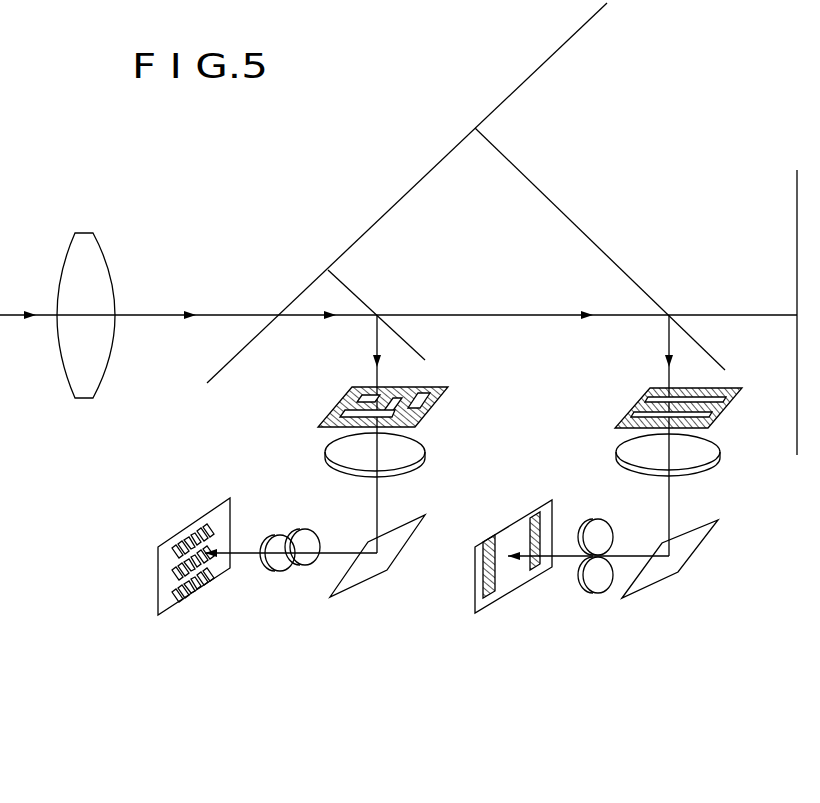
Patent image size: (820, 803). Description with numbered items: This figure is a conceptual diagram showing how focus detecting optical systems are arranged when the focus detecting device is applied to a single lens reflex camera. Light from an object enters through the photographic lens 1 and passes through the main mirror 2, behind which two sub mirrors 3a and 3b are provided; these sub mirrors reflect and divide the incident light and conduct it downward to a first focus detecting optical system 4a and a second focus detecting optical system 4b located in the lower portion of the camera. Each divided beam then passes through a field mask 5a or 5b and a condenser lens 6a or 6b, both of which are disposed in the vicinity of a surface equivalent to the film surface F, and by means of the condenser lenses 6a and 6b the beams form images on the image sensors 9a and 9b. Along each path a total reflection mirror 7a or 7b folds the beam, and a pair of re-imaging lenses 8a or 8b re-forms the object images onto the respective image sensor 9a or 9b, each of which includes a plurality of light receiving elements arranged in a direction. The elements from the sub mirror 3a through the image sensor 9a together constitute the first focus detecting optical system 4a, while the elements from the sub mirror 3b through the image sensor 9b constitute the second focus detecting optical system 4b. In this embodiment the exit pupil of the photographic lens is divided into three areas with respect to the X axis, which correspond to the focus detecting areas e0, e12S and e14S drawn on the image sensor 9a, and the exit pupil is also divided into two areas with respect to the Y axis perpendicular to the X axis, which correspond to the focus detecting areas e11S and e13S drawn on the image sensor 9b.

The photographic lens 1 is at (110, 268).
The main mirror 2 is at (570, 40).
The sub mirror 3a is at (350, 283).
The sub mirror 3b is at (625, 275).
The first focus detecting optical system 4a is at (292, 518).
The second focus detecting optical system 4b is at (586, 519).
The field mask 5a is at (433, 387).
The field mask 5b is at (648, 390).
The condenser lens 6a is at (415, 450).
The condenser lens 6b is at (632, 443).
The total reflection mirror 7a is at (368, 575).
The total reflection mirror 7b is at (692, 548).
The pair of re-imaging lenses 8a is at (300, 566).
The pair of re-imaging lenses 8b is at (584, 545).
The image sensor 9a is at (160, 597).
The image sensor 9b is at (513, 590).
The film surface F is at (795, 328).
The focus detecting area e0 is at (170, 570).
The focus detecting area e14S is at (190, 530).
The focus detecting area e12S is at (190, 586).
The focus detecting area e11S is at (540, 522).
The focus detecting area e13S is at (452, 575).